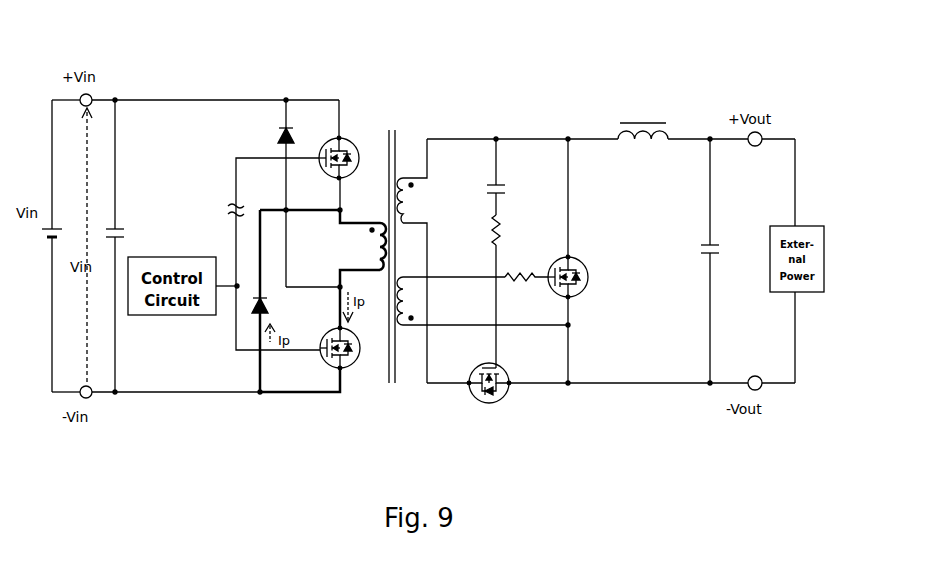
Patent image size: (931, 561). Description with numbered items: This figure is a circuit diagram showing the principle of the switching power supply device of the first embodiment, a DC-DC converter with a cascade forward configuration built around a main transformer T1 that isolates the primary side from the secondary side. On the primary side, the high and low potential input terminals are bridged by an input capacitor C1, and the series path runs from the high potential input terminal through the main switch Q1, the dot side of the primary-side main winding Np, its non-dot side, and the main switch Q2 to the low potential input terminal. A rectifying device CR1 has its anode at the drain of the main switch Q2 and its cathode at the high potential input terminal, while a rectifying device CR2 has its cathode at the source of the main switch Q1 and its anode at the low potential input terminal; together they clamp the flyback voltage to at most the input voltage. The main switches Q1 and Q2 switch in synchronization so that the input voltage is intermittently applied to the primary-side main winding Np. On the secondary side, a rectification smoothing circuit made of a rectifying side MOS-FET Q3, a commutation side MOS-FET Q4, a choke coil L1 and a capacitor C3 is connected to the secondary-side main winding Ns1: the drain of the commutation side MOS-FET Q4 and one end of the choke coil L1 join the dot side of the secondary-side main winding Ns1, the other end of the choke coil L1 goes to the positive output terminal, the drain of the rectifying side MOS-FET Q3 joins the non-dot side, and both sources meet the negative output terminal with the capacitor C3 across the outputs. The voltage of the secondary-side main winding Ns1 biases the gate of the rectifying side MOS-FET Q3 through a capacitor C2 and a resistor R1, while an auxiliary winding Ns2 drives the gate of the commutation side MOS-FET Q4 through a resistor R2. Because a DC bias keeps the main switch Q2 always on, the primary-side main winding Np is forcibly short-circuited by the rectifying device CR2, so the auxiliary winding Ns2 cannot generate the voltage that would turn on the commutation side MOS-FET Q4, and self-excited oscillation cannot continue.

The input capacitor C1 is at (123, 246).
The rectifying device CR1 is at (267, 193).
The rectifying device CR2 is at (276, 301).
The main switch Q1 is at (337, 147).
The main switch Q2 is at (336, 339).
The primary-side main winding Np is at (352, 246).
The main transformer T1 is at (391, 250).
The secondary-side main winding Ns1 is at (428, 261).
The auxiliary winding Ns2 is at (482, 301).
The capacitor C2 is at (506, 177).
The resistor R1 is at (508, 289).
The resistor R2 is at (526, 287).
The rectifying side MOS-FET Q3 is at (500, 384).
The commutation side MOS-FET Q4 is at (570, 261).
The choke coil L1 is at (632, 127).
The capacitor C3 is at (719, 261).